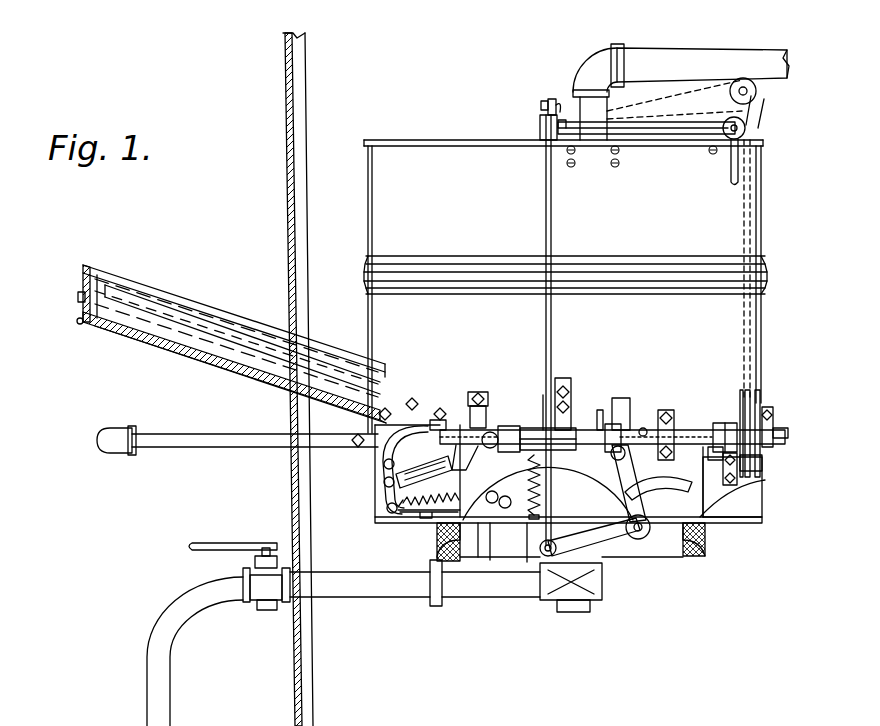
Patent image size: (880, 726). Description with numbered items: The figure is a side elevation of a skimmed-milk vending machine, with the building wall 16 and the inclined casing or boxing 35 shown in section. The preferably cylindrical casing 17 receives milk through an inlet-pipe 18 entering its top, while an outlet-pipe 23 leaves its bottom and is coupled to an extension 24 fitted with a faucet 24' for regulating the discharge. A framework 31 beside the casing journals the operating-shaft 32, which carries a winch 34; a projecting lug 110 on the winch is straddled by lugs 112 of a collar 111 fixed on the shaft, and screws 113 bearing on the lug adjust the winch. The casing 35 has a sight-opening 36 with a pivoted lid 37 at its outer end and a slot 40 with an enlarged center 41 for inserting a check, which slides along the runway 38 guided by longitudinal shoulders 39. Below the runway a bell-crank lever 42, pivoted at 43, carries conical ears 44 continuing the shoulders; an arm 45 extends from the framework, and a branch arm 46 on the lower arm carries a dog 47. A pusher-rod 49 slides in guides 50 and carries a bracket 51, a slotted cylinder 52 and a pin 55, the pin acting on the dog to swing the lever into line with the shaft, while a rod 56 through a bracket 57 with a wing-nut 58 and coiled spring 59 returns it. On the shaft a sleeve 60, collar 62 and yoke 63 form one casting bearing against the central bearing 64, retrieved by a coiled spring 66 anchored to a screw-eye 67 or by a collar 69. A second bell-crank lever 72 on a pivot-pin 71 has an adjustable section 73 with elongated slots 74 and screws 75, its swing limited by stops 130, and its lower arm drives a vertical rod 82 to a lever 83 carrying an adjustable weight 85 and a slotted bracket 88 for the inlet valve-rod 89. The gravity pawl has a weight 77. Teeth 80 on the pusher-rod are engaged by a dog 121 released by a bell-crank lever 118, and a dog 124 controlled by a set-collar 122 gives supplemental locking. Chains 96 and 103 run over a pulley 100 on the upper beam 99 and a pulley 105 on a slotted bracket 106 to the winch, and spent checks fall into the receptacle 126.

The wall 16 is at (294, 670).
The casing 17 is at (367, 170).
The inlet-pipe 18 is at (697, 48).
The outlet-pipe 23 is at (596, 604).
The extension 24 is at (415, 596).
The faucet 24' is at (239, 576).
The framework 31 is at (740, 524).
The operating-shaft 32 is at (703, 428).
The winch 34 is at (762, 392).
The casing or boxing 35 is at (205, 358).
The sight-opening 36 is at (78, 297).
The pivoted lid 37 is at (77, 322).
The runway 38 is at (248, 381).
The longitudinal shoulders 39 is at (214, 324).
The slot 40 is at (112, 277).
The enlarged center of slot 41 is at (108, 270).
The bell-crank lever 42 is at (384, 451).
The pivot 43 is at (386, 486).
The conical ears or lugs 44 is at (482, 442).
The arm 45 is at (478, 392).
The branch arm 46 is at (389, 511).
The dog 47 is at (385, 466).
The pusher-rod 49 is at (231, 448).
The guides 50 is at (388, 420).
The bracket 51 is at (505, 509).
The cylinder 52 is at (445, 406).
The pin 55 is at (505, 425).
The rod 56 is at (490, 504).
The bracket 57 is at (407, 506).
The wing-nut 58 is at (455, 576).
The coiled spring 59 is at (432, 512).
The sleeve 60 is at (556, 382).
The collar 62 is at (572, 424).
The yoke 63 is at (543, 393).
The central bearing 64 is at (578, 426).
The coiled spring 66 is at (527, 566).
The screw-eye 67 is at (490, 565).
The collar 69 is at (643, 428).
The pivot-pin 71 is at (640, 540).
The bell-crank lever 72 is at (621, 540).
The adjustable section 73 is at (560, 506).
The elongated slots 74 is at (650, 534).
The screws 75 is at (616, 483).
The weight 77 is at (528, 481).
The teeth 80 is at (613, 424).
The vertical rod 82 is at (553, 214).
The lever 83 is at (552, 106).
The adjustable weight 85 is at (540, 120).
The slotted bracket 88 is at (543, 102).
The valve-rod 89 is at (559, 105).
The chain 96 is at (743, 318).
The upper beam 99 is at (682, 135).
The pulley 100 is at (732, 142).
The chain 103 is at (752, 313).
The pulley 105 is at (756, 91).
The slotted bracket 106 is at (748, 102).
The projecting lug 110 is at (760, 405).
The collar 111 is at (770, 428).
The upwardly-extending lugs 112 is at (740, 462).
The screws 113 is at (762, 470).
The bell-crank lever 118 is at (622, 400).
The dog 121 is at (608, 401).
The set-collar 122 is at (674, 416).
The dog 124 is at (736, 486).
The receptacle 126 is at (480, 580).
The stops 130 is at (561, 471).